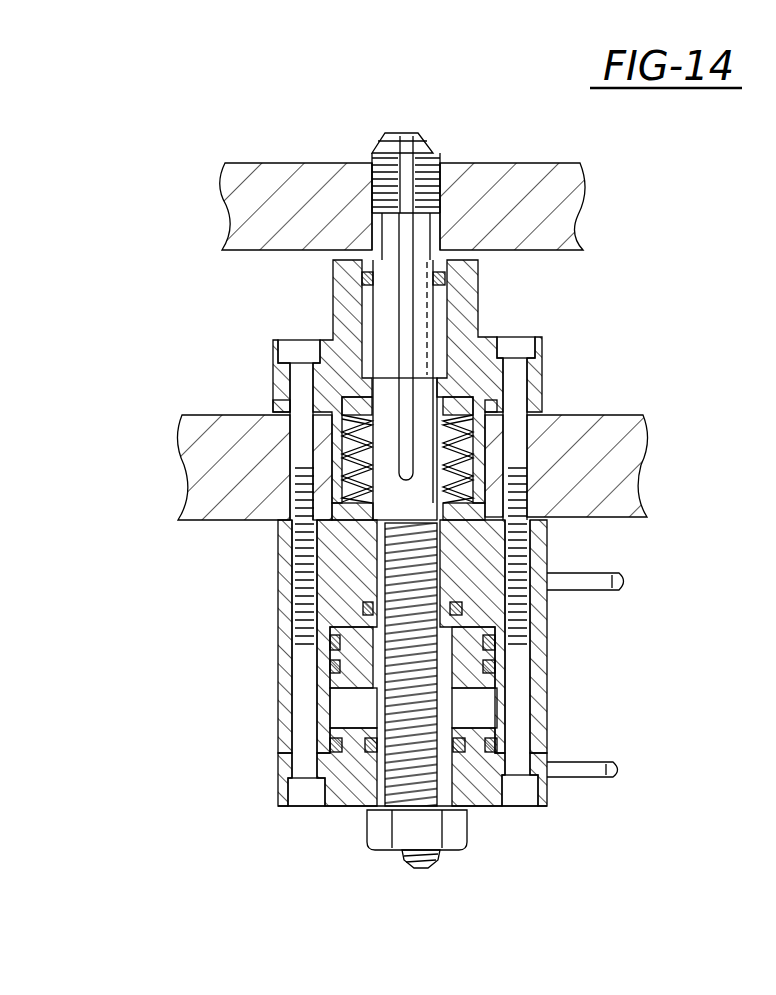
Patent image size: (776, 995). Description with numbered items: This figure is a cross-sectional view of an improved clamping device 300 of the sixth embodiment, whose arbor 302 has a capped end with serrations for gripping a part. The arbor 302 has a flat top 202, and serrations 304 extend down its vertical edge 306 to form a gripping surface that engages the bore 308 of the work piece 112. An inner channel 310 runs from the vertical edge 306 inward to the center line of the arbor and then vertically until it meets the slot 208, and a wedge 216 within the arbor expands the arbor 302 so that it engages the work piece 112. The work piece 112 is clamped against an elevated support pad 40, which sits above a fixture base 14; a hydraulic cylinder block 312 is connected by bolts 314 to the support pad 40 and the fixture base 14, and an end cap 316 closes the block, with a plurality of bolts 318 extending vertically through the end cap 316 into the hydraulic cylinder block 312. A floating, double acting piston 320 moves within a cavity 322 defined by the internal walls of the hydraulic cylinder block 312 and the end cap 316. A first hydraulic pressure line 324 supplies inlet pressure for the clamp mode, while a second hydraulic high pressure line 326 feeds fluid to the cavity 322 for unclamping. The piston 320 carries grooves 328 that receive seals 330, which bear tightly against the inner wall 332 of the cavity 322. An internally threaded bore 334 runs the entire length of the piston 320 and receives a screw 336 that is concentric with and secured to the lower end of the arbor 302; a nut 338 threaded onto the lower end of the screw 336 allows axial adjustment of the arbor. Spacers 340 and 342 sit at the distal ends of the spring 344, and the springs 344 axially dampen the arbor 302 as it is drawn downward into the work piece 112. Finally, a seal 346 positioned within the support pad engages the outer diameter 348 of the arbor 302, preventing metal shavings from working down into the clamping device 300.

The fixture base 14 is at (633, 480).
The elevated support pad 40 is at (530, 370).
The work piece 112 is at (580, 183).
The flat top 202 is at (409, 138).
The slot 208 is at (345, 250).
The wedge 216 is at (407, 307).
The clamping device 300 is at (668, 372).
The arbor 302 is at (393, 310).
The serrations 304 is at (370, 192).
The vertical edge 306 is at (440, 183).
The bore 308 is at (430, 150).
The inner channel 310 is at (390, 152).
The hydraulic cylinder block 312 is at (287, 568).
The bolts 314 is at (302, 383).
The end cap 316 is at (282, 773).
The bolts 318 is at (312, 723).
The floating piston 320 is at (337, 626).
The cavity 322 is at (482, 700).
The first hydraulic pressure line 324 is at (580, 577).
The second hydraulic high pressure line 326 is at (600, 777).
The grooves 328 is at (492, 650).
The seals 330 is at (490, 670).
The inner wall 332 is at (493, 733).
The internally threaded bore 334 is at (395, 660).
The screw 336 is at (430, 868).
The nut 338 is at (467, 830).
The spacer 340 is at (480, 383).
The spacer 342 is at (480, 505).
The spring 344 is at (473, 437).
The seal 346 is at (448, 278).
The outer diameter 348 is at (437, 347).